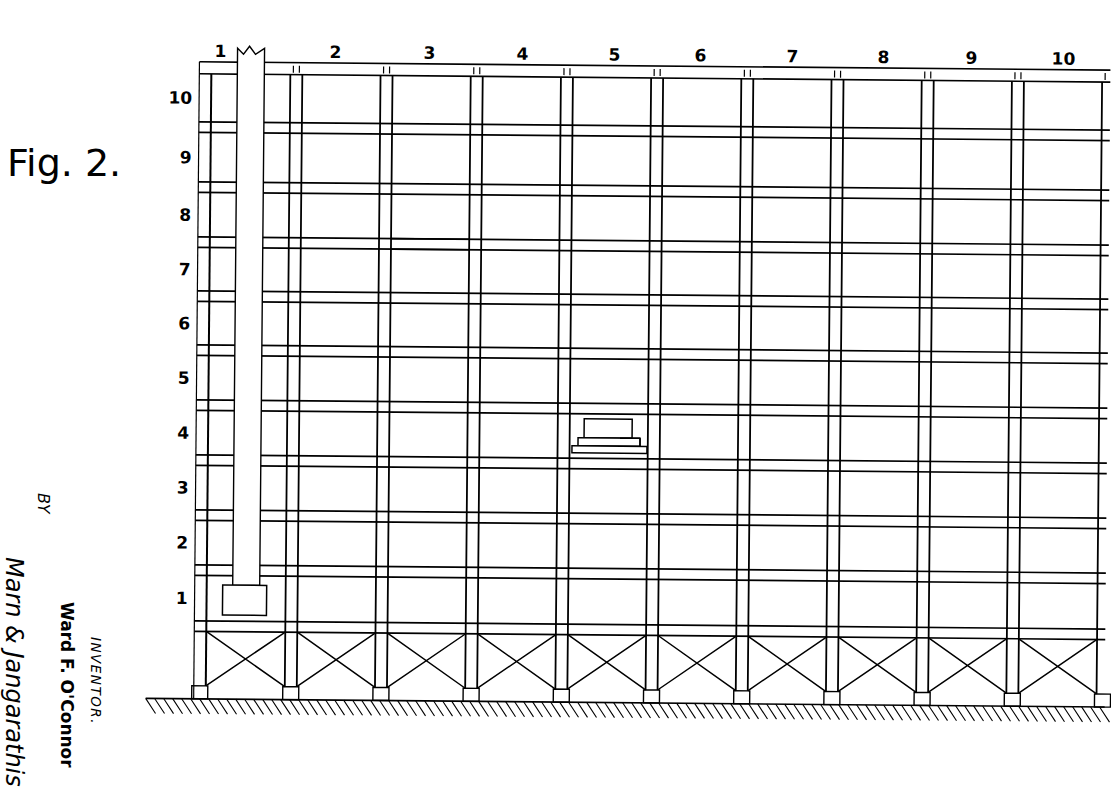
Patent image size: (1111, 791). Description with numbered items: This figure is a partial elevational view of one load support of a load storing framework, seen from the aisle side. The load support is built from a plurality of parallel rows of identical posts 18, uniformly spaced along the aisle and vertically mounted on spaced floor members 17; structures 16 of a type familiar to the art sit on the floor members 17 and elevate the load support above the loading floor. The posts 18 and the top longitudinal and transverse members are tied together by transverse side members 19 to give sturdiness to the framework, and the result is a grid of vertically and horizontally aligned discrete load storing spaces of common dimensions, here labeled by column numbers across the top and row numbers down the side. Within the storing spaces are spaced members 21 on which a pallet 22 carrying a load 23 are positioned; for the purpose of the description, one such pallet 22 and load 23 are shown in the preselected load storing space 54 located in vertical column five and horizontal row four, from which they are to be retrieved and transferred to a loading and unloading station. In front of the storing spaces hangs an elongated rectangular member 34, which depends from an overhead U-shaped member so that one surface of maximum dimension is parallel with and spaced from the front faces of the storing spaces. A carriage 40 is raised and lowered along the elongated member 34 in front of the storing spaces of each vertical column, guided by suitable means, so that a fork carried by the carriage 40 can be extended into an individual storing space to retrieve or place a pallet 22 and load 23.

The structure 16 is at (453, 673).
The floor member 17 is at (379, 687).
The post 18 is at (469, 99).
The transverse side member 19 is at (479, 231).
The spaced member 21 is at (649, 448).
The pallet 22 is at (582, 435).
The load 23 is at (644, 430).
The elongated rectangular member 34 is at (268, 390).
The carriage 40 is at (273, 605).
The load storing space 54 is at (582, 418).